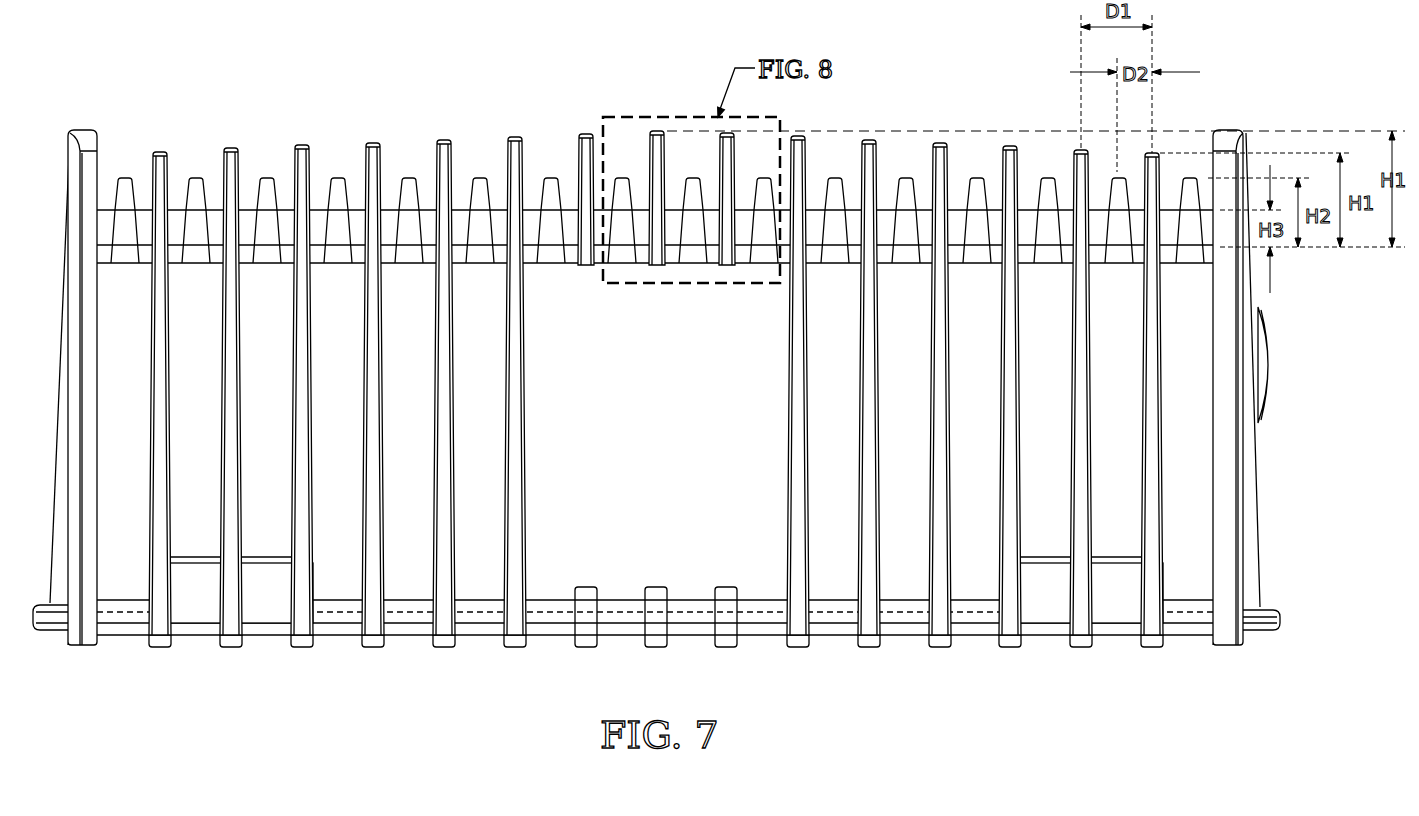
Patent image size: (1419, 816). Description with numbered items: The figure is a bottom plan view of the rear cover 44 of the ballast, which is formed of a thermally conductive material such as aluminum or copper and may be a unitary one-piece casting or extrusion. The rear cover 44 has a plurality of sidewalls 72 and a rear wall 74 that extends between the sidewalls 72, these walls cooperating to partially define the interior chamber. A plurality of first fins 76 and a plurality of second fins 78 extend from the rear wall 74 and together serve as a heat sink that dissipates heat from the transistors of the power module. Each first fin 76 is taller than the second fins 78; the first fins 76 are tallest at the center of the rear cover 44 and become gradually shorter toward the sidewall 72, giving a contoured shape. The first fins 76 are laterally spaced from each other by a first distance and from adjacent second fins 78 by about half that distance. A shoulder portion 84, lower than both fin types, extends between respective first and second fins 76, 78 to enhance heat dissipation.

The rear cover 44 is at (238, 78).
The sidewalls 72 is at (1257, 473).
The rear wall 74 is at (745, 262).
The first fins 76 is at (305, 146).
The second fins 78 is at (338, 176).
The shoulder portion 84 is at (427, 218).